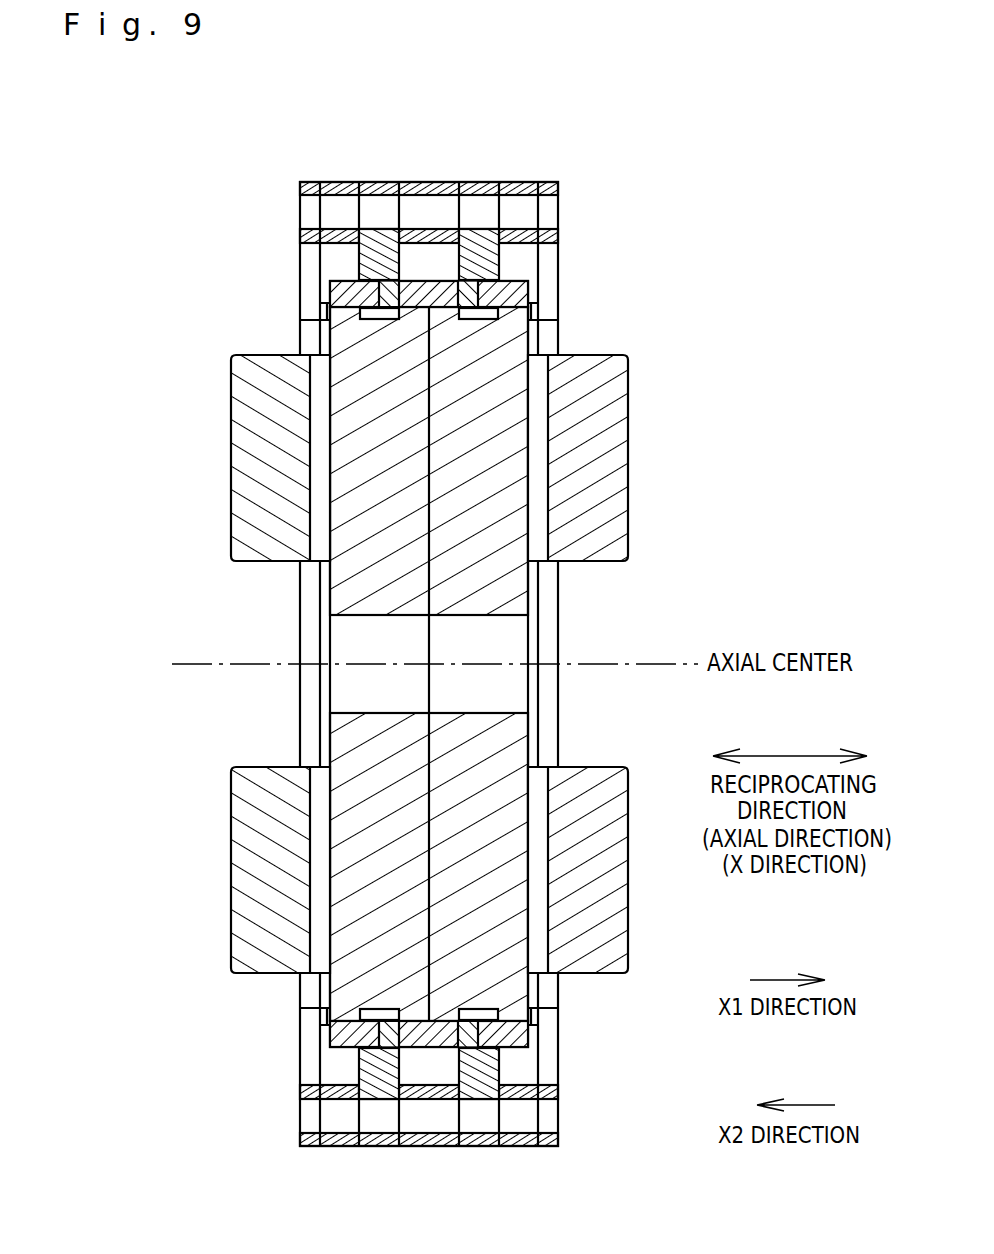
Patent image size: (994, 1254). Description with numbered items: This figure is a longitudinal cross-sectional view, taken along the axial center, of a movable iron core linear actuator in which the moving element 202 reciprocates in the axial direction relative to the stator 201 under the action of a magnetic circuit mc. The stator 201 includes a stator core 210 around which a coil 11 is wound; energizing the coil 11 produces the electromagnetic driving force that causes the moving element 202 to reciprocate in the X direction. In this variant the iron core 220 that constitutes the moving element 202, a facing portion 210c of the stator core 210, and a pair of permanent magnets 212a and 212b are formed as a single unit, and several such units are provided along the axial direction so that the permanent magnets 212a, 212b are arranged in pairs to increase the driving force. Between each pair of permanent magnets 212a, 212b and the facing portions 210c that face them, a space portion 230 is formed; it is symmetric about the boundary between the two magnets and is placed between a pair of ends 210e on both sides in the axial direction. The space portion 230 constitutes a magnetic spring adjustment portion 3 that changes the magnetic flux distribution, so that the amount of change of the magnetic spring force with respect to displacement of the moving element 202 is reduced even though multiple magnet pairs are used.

The magnetic spring adjustment portion 3 is at (757, 304).
The coil 11 is at (238, 432).
The stator 201 is at (705, 571).
The moving element 202 is at (592, 165).
The stator core 210 is at (329, 596).
The facing portion 210c is at (326, 312).
The end 210e is at (330, 337).
The permanent magnet 212a is at (443, 296).
The permanent magnet 212b is at (416, 296).
The iron core 220 is at (373, 242).
The space portion 230 is at (375, 321).
The magnetic circuit mc is at (792, 399).